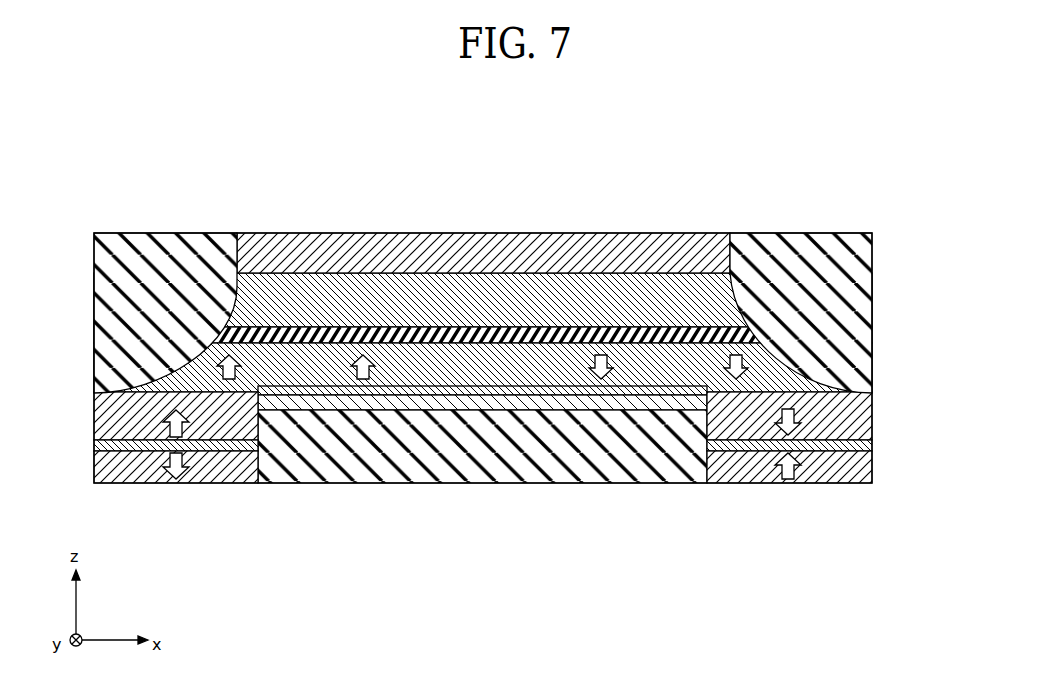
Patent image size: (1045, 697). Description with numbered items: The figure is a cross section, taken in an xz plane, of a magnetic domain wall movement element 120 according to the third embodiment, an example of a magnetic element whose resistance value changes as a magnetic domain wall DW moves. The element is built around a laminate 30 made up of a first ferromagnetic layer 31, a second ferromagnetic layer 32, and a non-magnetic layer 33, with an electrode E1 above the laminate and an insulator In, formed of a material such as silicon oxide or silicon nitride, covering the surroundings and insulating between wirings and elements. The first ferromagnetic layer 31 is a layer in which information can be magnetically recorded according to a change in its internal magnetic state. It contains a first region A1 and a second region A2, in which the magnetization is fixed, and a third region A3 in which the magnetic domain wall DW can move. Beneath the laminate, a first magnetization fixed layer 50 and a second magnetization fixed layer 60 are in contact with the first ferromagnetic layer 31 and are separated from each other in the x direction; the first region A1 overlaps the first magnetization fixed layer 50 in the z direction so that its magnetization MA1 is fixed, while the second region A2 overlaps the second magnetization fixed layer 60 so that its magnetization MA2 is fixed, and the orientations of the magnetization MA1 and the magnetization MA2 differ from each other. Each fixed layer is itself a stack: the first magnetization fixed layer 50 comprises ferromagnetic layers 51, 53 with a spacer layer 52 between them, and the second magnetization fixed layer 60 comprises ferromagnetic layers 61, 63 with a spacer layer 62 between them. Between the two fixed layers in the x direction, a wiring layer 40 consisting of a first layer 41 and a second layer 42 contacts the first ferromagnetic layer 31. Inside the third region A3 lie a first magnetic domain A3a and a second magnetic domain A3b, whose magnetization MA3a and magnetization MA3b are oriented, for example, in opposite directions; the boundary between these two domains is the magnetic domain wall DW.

The magnetic domain wall movement element 120 is at (742, 157).
The laminate 30 is at (597, 156).
The first ferromagnetic layer 31 is at (483, 249).
The second ferromagnetic layer 32 is at (460, 300).
The non-magnetic layer 33 is at (483, 378).
The magnetic domain wall DW is at (400, 330).
The electrode E1 is at (317, 253).
The insulator In is at (176, 274).
The wiring layer 40 is at (482, 492).
The first layer 41 is at (630, 400).
The second layer 42 is at (666, 390).
The first magnetization fixed layer 50 is at (145, 495).
The ferromagnetic layer 51 is at (118, 413).
The spacer layer 52 is at (118, 445).
The ferromagnetic layer 53 is at (118, 470).
The second magnetization fixed layer 60 is at (827, 495).
The ferromagnetic layer 61 is at (853, 410).
The spacer layer 62 is at (855, 445).
The ferromagnetic layer 63 is at (863, 465).
The first region A1 is at (230, 387).
The second region A2 is at (717, 387).
The third region A3 is at (497, 547).
The first magnetic domain A3a is at (371, 478).
The second magnetic domain A3b is at (532, 478).
The magnetization of the first region MA1 is at (220, 290).
The magnetization of the second region MA2 is at (770, 350).
The magnetization of the first magnetic domain MA3a is at (340, 395).
The magnetization of the second magnetic domain MA3b is at (575, 385).